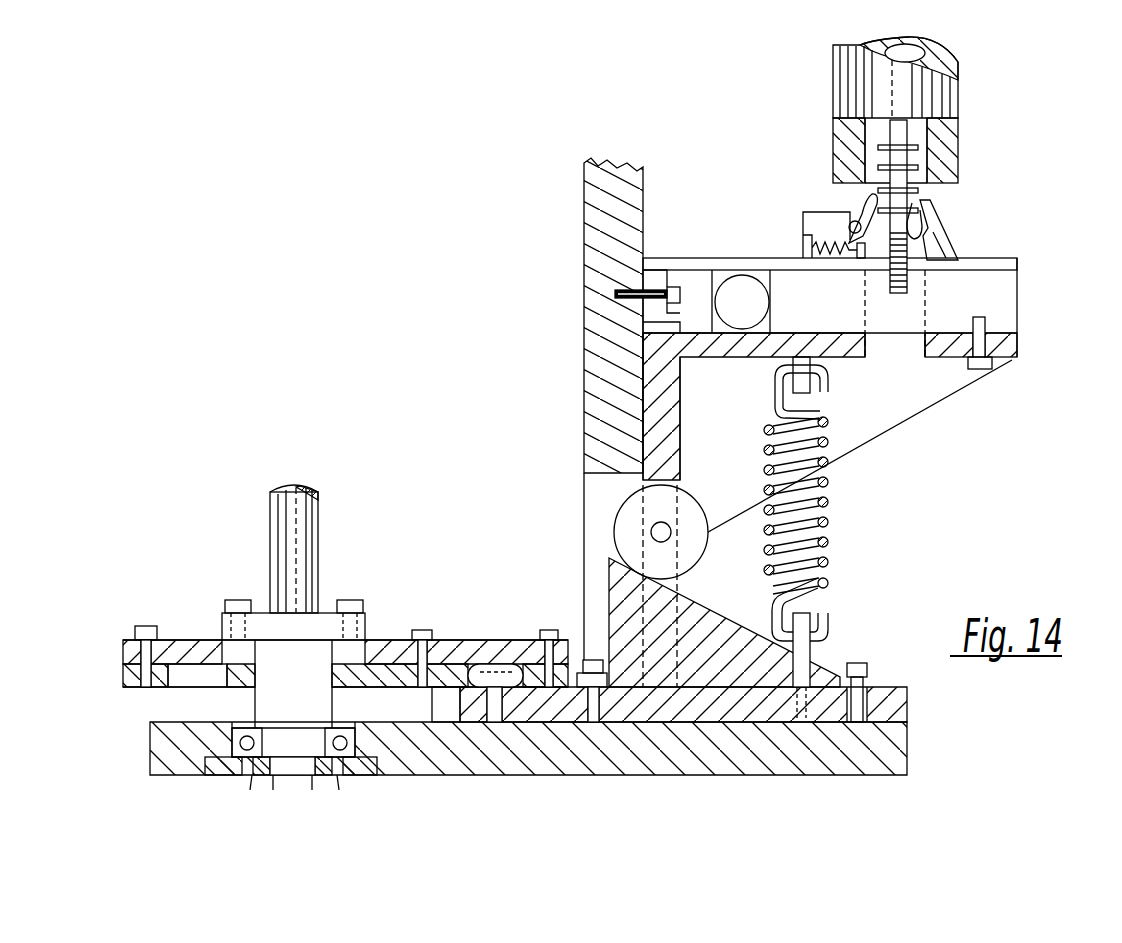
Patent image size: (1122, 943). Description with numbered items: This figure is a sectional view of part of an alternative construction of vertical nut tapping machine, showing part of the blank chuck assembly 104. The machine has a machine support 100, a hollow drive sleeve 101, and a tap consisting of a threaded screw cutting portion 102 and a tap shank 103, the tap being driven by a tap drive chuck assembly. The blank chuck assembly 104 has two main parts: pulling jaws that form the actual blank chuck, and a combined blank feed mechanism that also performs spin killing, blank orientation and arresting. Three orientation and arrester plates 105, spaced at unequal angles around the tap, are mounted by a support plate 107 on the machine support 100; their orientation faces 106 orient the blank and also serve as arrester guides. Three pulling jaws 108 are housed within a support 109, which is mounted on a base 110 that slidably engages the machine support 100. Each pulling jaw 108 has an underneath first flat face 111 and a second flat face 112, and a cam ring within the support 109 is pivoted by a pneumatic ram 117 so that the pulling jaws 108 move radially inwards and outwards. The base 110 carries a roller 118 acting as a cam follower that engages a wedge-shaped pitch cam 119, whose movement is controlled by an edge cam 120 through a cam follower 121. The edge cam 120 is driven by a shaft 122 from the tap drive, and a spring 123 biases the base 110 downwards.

The machine support 100 is at (590, 233).
The hollow drive sleeve 101 is at (933, 90).
The threaded screw cutting portion 102 is at (888, 280).
The tap shank 103 is at (897, 128).
The blank chuck assembly 104 is at (947, 213).
The orientation and arrester plates 105 is at (848, 221).
The orientation faces 106 is at (872, 216).
The support plate 107 is at (655, 273).
The pulling jaws 108 is at (948, 250).
The support 109 is at (1000, 298).
The base 110 is at (1002, 342).
The first flat face 111 is at (920, 203).
The second flat face 112 is at (943, 250).
The pneumatic ram 117 is at (738, 287).
The roller 118 is at (625, 528).
The wedge-shaped pitch cam 119 is at (615, 607).
The edge cam 120 is at (438, 672).
The cam follower 121 is at (472, 668).
The shaft 122 is at (307, 533).
The spring 123 is at (825, 507).